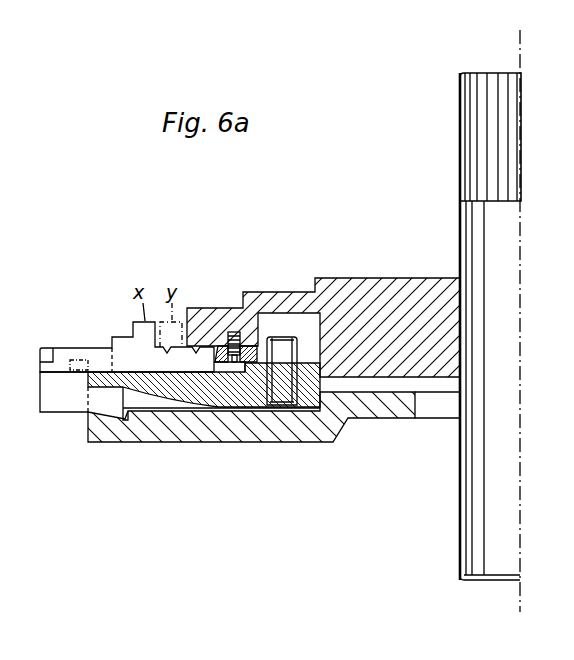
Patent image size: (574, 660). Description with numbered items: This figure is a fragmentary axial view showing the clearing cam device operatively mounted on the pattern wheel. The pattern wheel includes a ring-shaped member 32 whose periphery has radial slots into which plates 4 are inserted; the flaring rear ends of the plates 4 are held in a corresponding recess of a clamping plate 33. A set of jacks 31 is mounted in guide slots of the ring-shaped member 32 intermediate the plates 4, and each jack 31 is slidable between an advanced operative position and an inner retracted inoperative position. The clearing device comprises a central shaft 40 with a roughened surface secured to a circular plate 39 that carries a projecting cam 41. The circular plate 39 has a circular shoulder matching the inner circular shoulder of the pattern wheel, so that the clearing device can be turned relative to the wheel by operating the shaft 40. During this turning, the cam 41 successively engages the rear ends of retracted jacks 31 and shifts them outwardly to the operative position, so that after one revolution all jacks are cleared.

The plate 4 is at (60, 403).
The jack 31 is at (65, 351).
The ring-shaped member 32 is at (250, 396).
The clamping plate 33 is at (303, 430).
The circular plate 39 is at (383, 285).
The central shaft 40 is at (468, 158).
The cam 41 is at (219, 346).